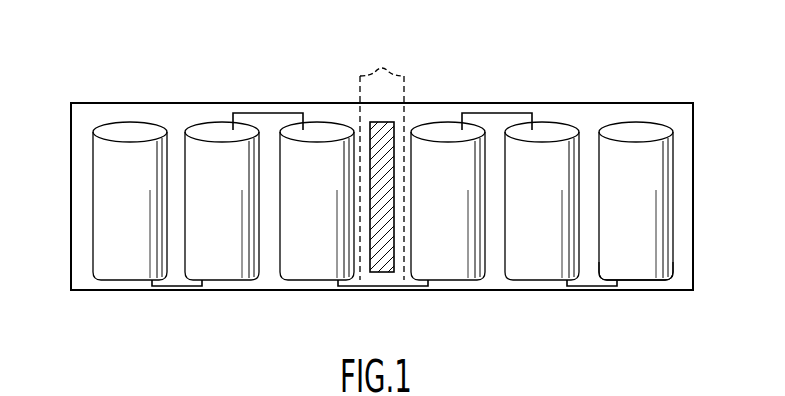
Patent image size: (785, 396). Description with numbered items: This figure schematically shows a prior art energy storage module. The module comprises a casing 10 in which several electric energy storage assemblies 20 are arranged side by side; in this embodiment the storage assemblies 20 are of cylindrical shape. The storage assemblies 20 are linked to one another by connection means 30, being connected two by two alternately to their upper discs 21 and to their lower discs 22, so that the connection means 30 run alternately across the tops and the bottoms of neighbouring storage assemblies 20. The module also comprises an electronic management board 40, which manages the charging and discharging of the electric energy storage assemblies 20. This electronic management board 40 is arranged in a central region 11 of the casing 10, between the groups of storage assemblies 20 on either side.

The casing 10 is at (83, 293).
The central region 11 is at (382, 64).
The electric energy storage assembly 20 is at (97, 239).
The upper disc 21 is at (638, 130).
The lower disc 22 is at (652, 287).
The connection means 30 is at (268, 112).
The electronic management board 40 is at (385, 260).